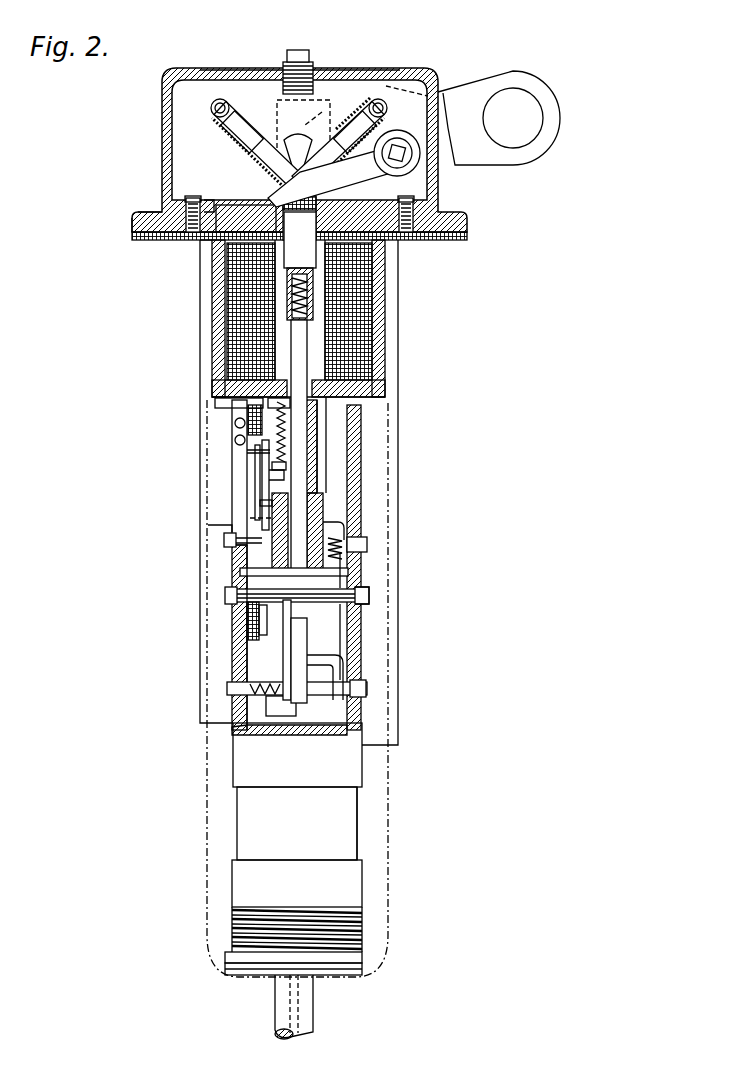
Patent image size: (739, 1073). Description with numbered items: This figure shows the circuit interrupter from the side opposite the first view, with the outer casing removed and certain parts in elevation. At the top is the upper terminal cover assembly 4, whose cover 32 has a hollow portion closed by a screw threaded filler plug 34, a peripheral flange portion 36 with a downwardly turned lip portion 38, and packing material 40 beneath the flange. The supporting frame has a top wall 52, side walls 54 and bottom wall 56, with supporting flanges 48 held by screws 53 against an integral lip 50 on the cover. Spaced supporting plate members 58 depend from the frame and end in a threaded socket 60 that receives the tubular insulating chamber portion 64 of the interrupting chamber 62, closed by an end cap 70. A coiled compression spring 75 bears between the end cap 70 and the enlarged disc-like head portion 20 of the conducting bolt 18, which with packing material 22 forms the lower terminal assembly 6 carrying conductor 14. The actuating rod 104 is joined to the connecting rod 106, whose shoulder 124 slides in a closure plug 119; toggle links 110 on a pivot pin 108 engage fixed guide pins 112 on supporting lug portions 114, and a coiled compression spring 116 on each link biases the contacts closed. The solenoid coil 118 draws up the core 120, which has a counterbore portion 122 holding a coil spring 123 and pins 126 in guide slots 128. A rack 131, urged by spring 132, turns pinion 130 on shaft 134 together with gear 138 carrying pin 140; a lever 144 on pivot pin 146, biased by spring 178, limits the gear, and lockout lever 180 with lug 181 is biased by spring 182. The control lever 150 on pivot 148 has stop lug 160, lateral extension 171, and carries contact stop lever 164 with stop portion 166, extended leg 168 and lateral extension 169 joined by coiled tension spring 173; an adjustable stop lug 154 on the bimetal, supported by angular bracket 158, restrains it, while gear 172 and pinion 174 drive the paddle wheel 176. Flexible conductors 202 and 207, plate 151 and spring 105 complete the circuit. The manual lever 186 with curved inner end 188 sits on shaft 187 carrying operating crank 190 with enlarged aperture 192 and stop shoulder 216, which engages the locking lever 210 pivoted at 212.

The upper terminal cover assembly 4 is at (140, 116).
The lower terminal assembly 6 is at (242, 1002).
The conductor 14 is at (294, 998).
The conducting bolt 18 is at (278, 1006).
The enlarged disc-like head portion 20 is at (235, 955).
The packing material 22 is at (230, 968).
The cover 32 is at (162, 138).
The screw threaded filler plug 34 is at (300, 66).
The peripheral flange portion 36 is at (143, 212).
The downwardly turned lip portion 38 is at (132, 229).
The packing material 40 is at (157, 240).
The supporting flanges 48 is at (186, 240).
The integral lip 50 is at (208, 203).
The top wall 52 is at (232, 215).
The screws 53 is at (197, 202).
The side walls 54 is at (212, 289).
The bottom wall 56 is at (328, 400).
The supporting plate members 58 is at (240, 632).
The threaded socket 60 is at (242, 754).
The interrupting chamber 62 is at (340, 807).
The tubular insulating chamber portion 64 is at (242, 827).
The end cap 70 is at (348, 870).
The coiled compression spring 75 is at (237, 925).
The actuating rod 104 is at (300, 498).
The spring 105 is at (313, 320).
The connecting rod 106 is at (372, 254).
The pivot pin 108 is at (298, 172).
The toggle links 110 is at (233, 145).
The fixed guide pins 112 is at (214, 107).
The supporting lug portions 114 is at (213, 84).
The coiled compression spring 116 is at (306, 140).
The solenoid coil 118 is at (372, 271).
The closure plug 119 is at (223, 259).
The core 120 is at (323, 438).
The counterbore portion 122 is at (313, 430).
The coil spring 123 is at (327, 453).
The shoulder 124 is at (297, 266).
The pins 126 is at (363, 545).
The guide slots 128 is at (357, 467).
The pinion 130 is at (360, 573).
The rack 131 is at (340, 638).
The spring 132 is at (333, 535).
The shaft 134 is at (360, 593).
The gear 138 is at (240, 611).
The pin 140 is at (240, 573).
The lever 144 is at (240, 651).
The pivot pin 146 is at (360, 687).
The pivot 148 is at (247, 539).
The control lever 150 is at (258, 463).
The plate 151 is at (250, 543).
The adjustable stop lug 154 is at (223, 383).
The angular bracket 158 is at (235, 423).
The stop lug 160 is at (265, 503).
The contact stop lever 164 is at (255, 452).
The stop portion 166 is at (268, 476).
The extended leg 168 is at (258, 519).
The lateral extension 169 is at (278, 415).
The lateral extension 171 is at (278, 460).
The gear 172 is at (240, 623).
The coiled tension spring 173 is at (278, 440).
The pinion 174 is at (240, 584).
The paddle wheel 176 is at (290, 623).
The spring 178 is at (228, 697).
The lockout lever 180 is at (298, 653).
The lug 181 is at (292, 704).
The spring 182 is at (268, 682).
The lever 186 is at (358, 183).
The shaft 187 is at (412, 172).
The curved inner end 188 is at (282, 195).
The operating crank 190 is at (458, 102).
The enlarged aperture 192 is at (502, 90).
The flexible conductor 202 is at (210, 530).
The flexible conductor 207 is at (218, 402).
The locking lever 210 is at (258, 60).
The pivot 212 is at (322, 112).
The stop shoulder 216 is at (386, 86).